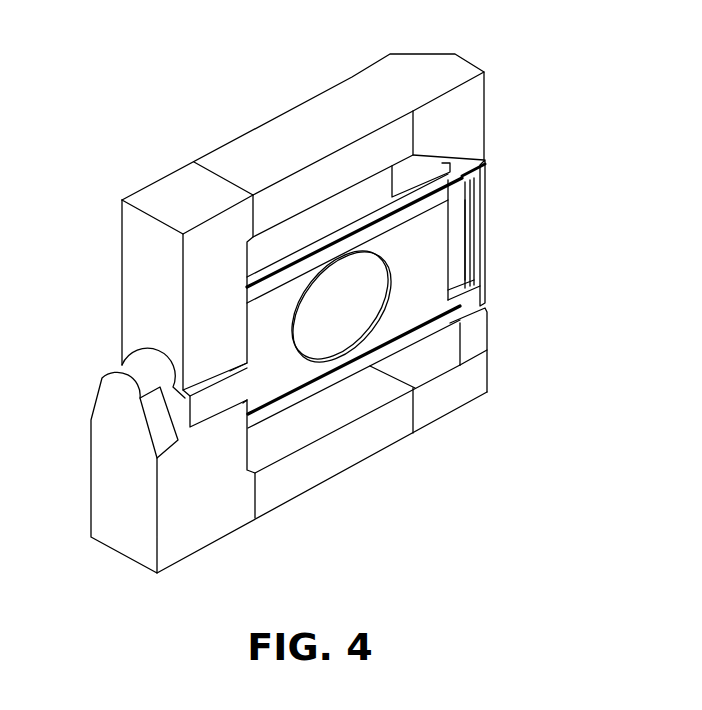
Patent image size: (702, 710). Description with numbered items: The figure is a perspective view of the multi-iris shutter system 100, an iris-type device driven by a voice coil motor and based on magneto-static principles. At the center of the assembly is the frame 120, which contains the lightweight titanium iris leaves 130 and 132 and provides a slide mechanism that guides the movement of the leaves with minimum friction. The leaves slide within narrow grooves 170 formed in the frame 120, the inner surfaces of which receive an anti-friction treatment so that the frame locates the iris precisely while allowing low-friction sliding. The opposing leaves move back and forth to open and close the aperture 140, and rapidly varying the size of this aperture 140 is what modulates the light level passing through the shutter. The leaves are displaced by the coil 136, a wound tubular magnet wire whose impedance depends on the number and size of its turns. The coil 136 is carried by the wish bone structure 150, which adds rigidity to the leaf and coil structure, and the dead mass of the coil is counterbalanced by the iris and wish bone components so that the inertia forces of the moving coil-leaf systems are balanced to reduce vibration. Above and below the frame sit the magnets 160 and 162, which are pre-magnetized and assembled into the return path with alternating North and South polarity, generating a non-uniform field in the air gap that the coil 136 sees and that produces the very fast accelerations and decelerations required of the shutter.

The multi-iris shutter system 100 is at (175, 74).
The frame 120 is at (489, 206).
The iris leaf 130 is at (437, 240).
The iris leaf 132 is at (293, 375).
The coil 136 is at (210, 387).
The aperture 140 is at (337, 327).
The wish bone structure 150 is at (203, 395).
The magnet 160 is at (280, 128).
The magnet 162 is at (280, 495).
The grooves 170 is at (456, 275).